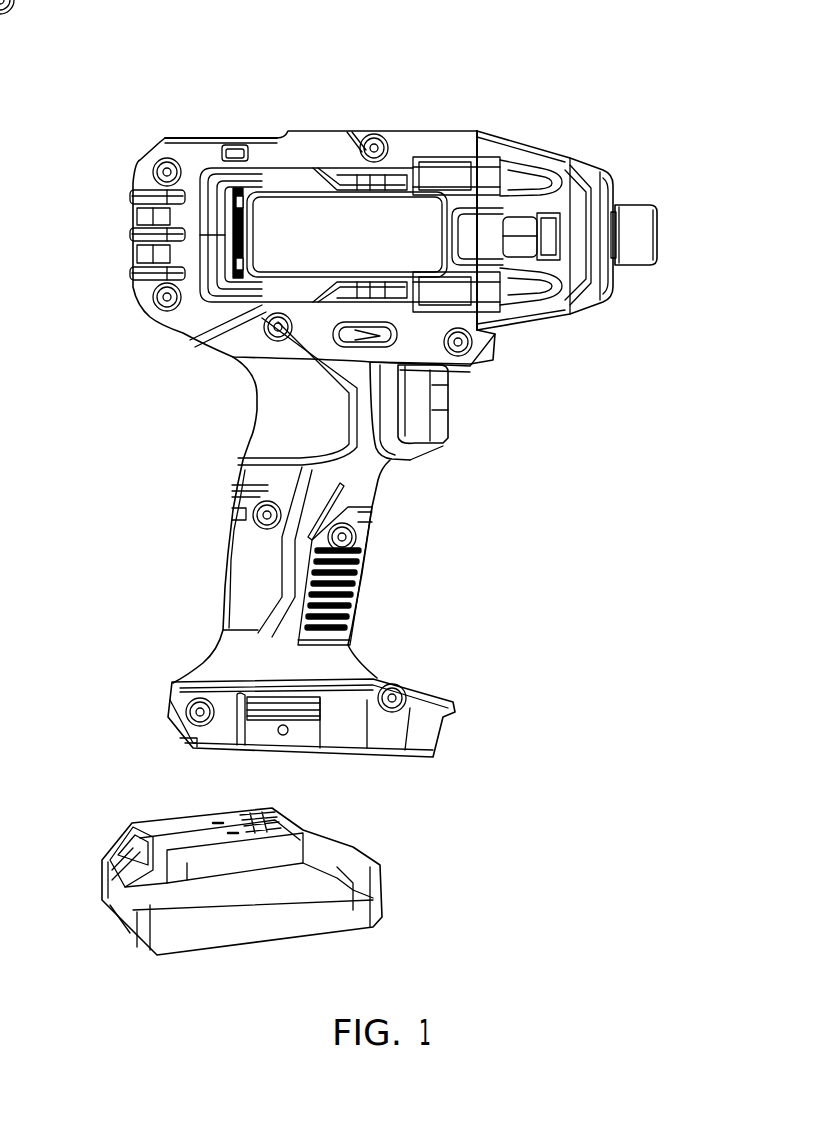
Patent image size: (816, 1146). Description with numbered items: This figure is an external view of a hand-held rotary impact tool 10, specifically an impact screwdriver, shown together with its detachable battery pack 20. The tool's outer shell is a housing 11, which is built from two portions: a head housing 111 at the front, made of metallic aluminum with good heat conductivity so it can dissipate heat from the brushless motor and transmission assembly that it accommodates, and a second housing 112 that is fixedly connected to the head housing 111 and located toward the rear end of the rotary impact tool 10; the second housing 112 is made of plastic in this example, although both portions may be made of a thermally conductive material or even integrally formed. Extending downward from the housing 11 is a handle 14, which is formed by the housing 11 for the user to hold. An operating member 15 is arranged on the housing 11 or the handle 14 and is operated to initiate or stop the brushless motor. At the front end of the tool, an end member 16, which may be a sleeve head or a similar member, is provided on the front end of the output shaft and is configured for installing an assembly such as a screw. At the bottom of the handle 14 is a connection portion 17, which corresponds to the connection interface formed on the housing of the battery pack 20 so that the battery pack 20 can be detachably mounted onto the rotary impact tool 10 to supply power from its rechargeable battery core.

The rotary impact tool 10 is at (126, 150).
The housing 11 is at (390, 122).
The head housing 111 is at (549, 155).
The second housing 112 is at (270, 150).
The handle 14 is at (258, 440).
The operating member 15 is at (443, 411).
The end member 16 is at (660, 222).
The connection portion 17 is at (394, 773).
The battery pack 20 is at (102, 897).